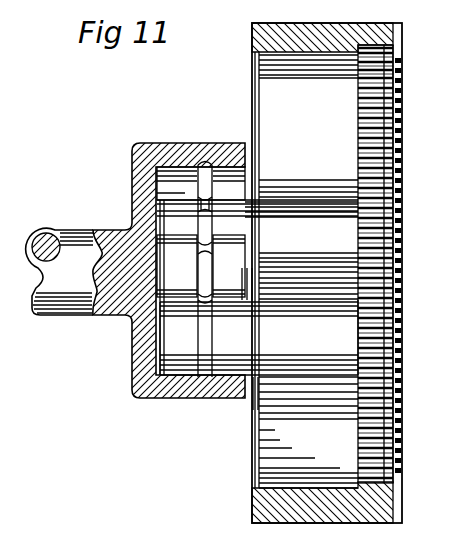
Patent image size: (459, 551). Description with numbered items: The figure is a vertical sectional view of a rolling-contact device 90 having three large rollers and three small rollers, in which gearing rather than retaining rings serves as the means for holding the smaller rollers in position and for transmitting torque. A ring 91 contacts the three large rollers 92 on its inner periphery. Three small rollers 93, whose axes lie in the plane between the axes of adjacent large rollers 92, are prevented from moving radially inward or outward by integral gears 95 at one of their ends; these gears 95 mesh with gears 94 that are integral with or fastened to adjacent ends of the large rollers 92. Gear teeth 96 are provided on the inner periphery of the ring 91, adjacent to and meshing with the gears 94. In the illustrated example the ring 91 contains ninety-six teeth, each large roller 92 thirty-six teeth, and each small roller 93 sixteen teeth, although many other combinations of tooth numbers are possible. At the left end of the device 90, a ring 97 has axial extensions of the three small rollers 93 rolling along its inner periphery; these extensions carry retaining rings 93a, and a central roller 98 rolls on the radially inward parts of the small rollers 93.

The rolling-contact device 90 is at (136, 75).
The ring 91 is at (252, 34).
The large rollers 92 is at (300, 122).
The small rollers 93 is at (290, 351).
The retaining rings 93a is at (212, 338).
The gears 94 is at (358, 140).
The integral gears 95 is at (358, 333).
The gear teeth 96 is at (403, 76).
The ring 97 is at (132, 358).
The central roller 98 is at (228, 262).